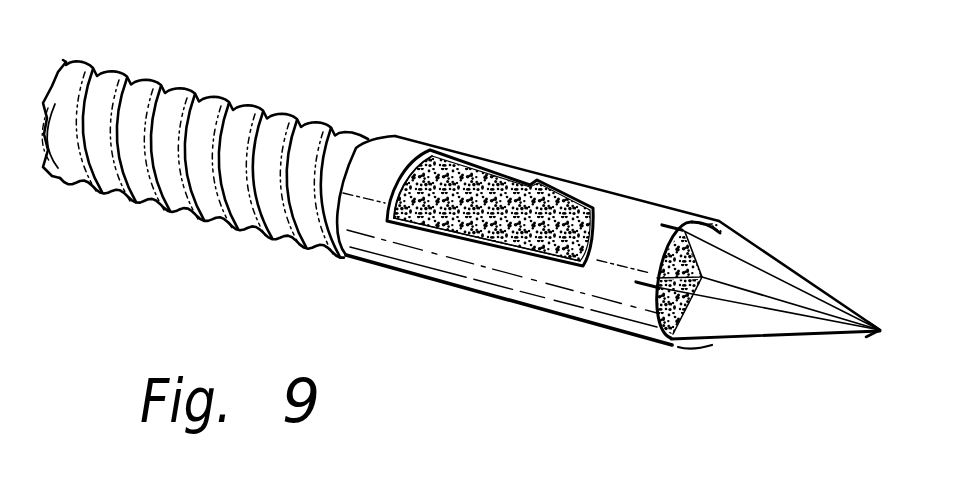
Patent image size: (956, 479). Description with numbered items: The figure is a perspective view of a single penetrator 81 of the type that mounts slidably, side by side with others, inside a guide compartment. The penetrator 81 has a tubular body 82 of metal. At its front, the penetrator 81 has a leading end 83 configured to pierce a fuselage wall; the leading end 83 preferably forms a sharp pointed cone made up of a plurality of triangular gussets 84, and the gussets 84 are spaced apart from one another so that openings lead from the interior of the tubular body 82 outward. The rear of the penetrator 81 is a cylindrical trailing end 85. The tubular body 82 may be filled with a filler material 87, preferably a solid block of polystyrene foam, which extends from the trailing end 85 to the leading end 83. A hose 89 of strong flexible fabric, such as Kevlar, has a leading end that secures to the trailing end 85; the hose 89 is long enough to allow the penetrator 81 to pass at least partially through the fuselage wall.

The penetrator 81 is at (600, 144).
The tubular body 82 is at (627, 228).
The leading end 83 is at (878, 332).
The triangular gussets 84 is at (737, 267).
The trailing end 85 is at (400, 150).
The filler material 87 is at (477, 160).
The hose 89 is at (173, 93).